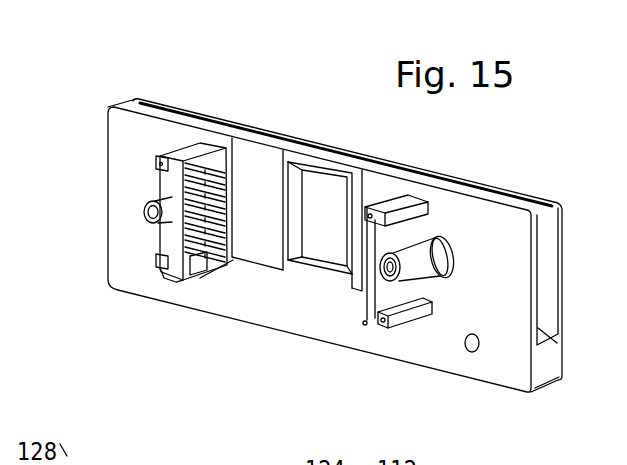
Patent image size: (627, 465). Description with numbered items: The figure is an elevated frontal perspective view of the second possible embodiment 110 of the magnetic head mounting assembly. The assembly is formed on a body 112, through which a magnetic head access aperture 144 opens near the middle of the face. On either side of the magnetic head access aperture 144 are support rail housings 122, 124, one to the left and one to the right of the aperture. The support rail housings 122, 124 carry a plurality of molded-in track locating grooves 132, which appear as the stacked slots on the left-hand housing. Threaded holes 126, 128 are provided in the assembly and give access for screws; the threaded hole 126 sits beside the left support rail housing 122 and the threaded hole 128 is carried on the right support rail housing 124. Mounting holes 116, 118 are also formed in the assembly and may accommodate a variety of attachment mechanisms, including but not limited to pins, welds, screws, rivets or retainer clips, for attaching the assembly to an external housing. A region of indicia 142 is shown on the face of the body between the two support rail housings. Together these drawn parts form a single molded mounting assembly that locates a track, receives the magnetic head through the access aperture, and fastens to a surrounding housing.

The second possible embodiment of the magnetic head mounting assembly 110 is at (218, 99).
The faceplate panel 112 is at (547, 225).
The mounting hole 116 is at (176, 258).
The mounting hole 118 is at (468, 352).
The support rail housing 122 is at (185, 153).
The support rail housing 124 is at (395, 202).
The threaded hole 126 is at (145, 218).
The threaded hole 128 is at (398, 278).
The track locating grooves 132 is at (197, 259).
The label indicia 142 is at (323, 322).
The magnetic head access aperture 144 is at (327, 210).